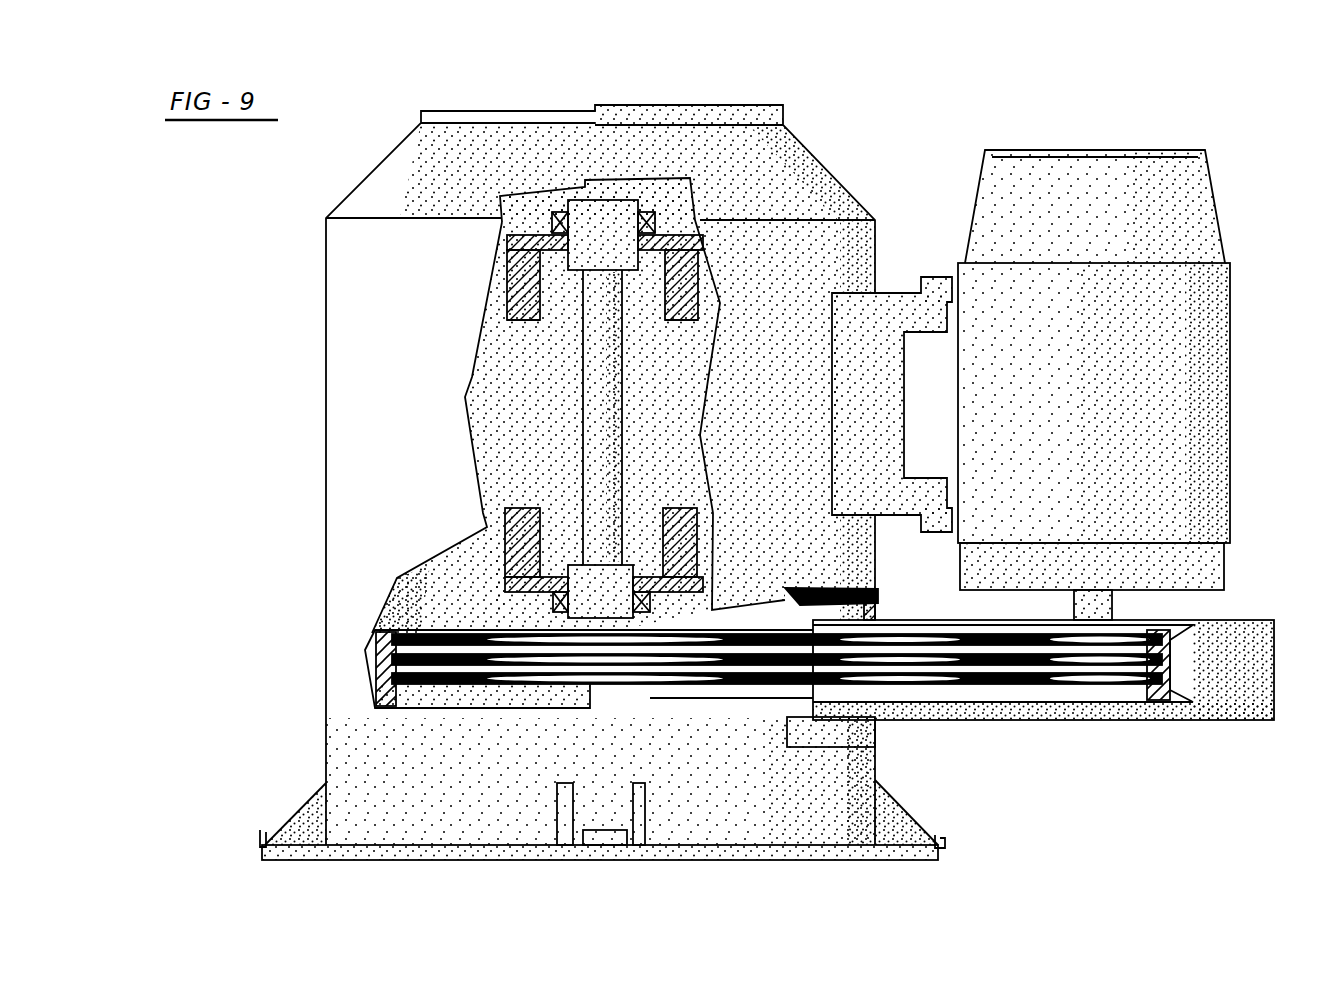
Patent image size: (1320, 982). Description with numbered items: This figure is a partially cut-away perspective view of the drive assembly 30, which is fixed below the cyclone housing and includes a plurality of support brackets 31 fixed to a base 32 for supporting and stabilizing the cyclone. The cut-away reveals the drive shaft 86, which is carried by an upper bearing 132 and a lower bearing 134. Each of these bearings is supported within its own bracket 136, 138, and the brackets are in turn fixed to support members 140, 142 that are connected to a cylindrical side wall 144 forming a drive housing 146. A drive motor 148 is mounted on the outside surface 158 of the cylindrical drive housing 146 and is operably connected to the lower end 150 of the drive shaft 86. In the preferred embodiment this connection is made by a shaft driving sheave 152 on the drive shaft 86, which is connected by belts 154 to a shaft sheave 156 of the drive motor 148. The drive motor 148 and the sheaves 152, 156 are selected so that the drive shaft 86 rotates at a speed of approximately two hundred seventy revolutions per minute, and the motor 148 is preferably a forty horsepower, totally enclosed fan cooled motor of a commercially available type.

The drive assembly 30 is at (873, 142).
The support brackets 31 is at (306, 800).
The base 32 is at (362, 854).
The drive shaft 86 is at (598, 482).
The upper bearing 132 is at (512, 198).
The lower bearing 134 is at (520, 577).
The bracket 136 is at (676, 236).
The bracket 138 is at (712, 578).
The support member 140 is at (538, 307).
The support member 142 is at (668, 517).
The cylindrical side wall 144 is at (345, 492).
The drive housing 146 is at (877, 251).
The drive motor 148 is at (1210, 300).
The lower end 150 is at (538, 725).
The shaft driving sheave 152 is at (584, 683).
The belts 154 is at (775, 681).
The shaft sheave 156 is at (1065, 682).
The outside surface 158 is at (766, 440).